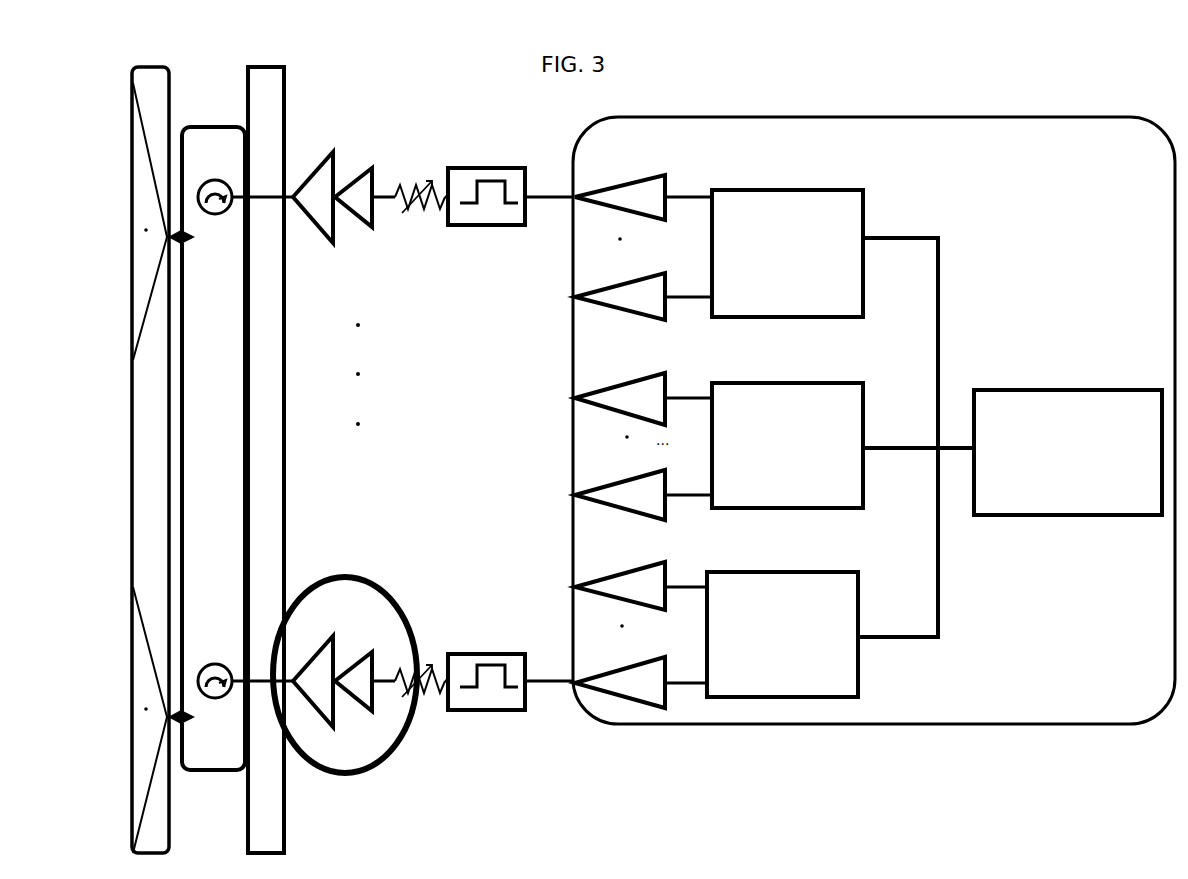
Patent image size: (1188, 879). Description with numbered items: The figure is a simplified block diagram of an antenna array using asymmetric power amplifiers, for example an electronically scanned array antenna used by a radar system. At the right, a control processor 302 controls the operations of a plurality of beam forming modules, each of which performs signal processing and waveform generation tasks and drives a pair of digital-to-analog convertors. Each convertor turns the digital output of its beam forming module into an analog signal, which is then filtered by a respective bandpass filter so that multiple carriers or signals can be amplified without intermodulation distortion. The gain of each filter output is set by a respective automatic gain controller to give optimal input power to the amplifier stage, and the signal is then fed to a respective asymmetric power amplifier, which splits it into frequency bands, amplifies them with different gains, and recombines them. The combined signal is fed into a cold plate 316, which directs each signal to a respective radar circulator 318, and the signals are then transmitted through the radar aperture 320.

The control processor 302 is at (1067, 390).
The cold plate 316 is at (283, 787).
The radar circulator 318 is at (203, 128).
The radar aperture 320 is at (132, 783).